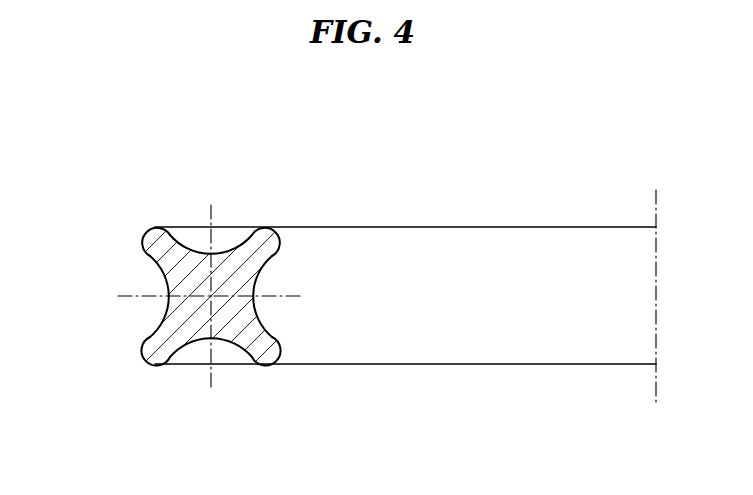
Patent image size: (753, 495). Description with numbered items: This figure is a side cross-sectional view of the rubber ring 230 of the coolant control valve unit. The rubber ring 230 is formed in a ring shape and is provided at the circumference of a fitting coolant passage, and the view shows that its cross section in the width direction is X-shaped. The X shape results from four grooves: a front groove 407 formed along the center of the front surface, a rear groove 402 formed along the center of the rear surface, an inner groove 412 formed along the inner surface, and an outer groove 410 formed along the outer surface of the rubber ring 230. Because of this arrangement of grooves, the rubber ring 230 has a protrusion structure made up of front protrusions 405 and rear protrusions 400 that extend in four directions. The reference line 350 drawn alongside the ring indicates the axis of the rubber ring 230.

The rubber ring 230 is at (490, 370).
The axis of the rubber ring 350 is at (656, 206).
The rear protrusions 400 is at (152, 363).
The rear groove 402 is at (201, 345).
The front protrusions 405 is at (150, 230).
The front groove 407 is at (223, 243).
The outer groove 410 is at (158, 282).
The inner groove 412 is at (268, 308).